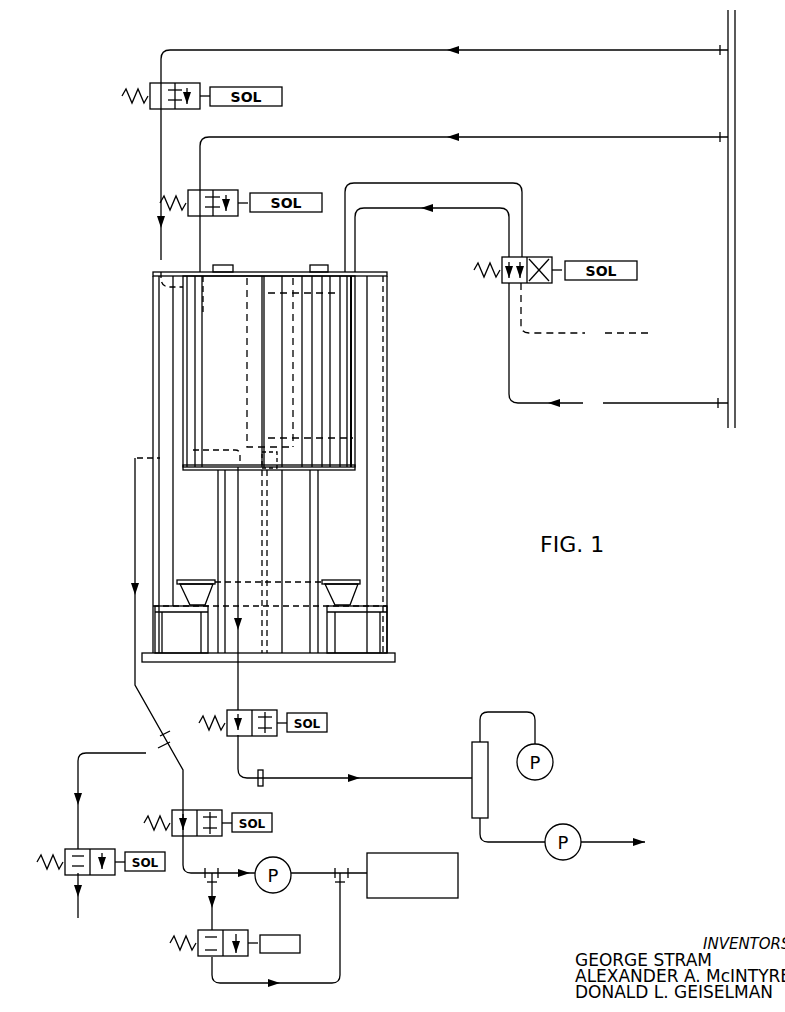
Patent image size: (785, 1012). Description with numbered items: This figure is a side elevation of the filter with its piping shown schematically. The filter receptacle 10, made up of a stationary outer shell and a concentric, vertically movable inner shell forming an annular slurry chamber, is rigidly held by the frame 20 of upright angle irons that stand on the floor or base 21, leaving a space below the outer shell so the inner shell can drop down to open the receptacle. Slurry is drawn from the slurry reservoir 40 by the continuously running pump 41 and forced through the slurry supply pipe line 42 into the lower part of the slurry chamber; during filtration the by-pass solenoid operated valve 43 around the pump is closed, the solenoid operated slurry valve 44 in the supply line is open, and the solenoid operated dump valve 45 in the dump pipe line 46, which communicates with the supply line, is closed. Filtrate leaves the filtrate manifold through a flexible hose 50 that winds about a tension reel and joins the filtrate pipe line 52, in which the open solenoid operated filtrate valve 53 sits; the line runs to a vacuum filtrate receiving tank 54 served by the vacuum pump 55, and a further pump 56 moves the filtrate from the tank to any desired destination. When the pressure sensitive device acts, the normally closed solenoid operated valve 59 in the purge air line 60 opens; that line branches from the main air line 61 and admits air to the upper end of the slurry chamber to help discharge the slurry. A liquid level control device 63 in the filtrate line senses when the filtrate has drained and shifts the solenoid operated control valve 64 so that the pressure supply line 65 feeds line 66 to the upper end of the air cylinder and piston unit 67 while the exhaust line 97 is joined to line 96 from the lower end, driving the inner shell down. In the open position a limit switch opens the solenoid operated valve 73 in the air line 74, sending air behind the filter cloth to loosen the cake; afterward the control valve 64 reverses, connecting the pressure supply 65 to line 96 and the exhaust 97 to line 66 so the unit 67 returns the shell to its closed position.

The filter receptacle 10 is at (178, 375).
The frame 20 is at (388, 474).
The floor or base 21 is at (383, 402).
The slurry reservoir 40 is at (428, 898).
The pump 41 is at (278, 858).
The slurry supply pipe line 42 is at (133, 676).
The by-pass solenoid operated valve 43 is at (205, 957).
The solenoid operated slurry valve 44 is at (188, 810).
The solenoid operated dump valve 45 is at (92, 875).
The dump pipe line 46 is at (78, 758).
The flexible hose 50 is at (238, 522).
The filtrate pipe line 52 is at (285, 778).
The solenoid operated filtrate valve 53 is at (266, 712).
The vacuum filtrate receiving tank 54 is at (472, 768).
The vacuum pump 55 is at (552, 752).
The pump 56 is at (580, 832).
The solenoid operated valve 59 is at (150, 108).
The purge air line 60 is at (352, 50).
The main air line 61 is at (736, 202).
The liquid level control device 63 is at (264, 782).
The solenoid operated control valve 64 is at (541, 257).
The pressure supply line 65 is at (532, 405).
The line 66 is at (478, 183).
The air cylinder and piston unit 67 is at (247, 322).
The solenoid operated valve 73 is at (214, 190).
The air line 74 is at (420, 137).
The line 96 is at (455, 208).
The exhaust line 97 is at (606, 339).